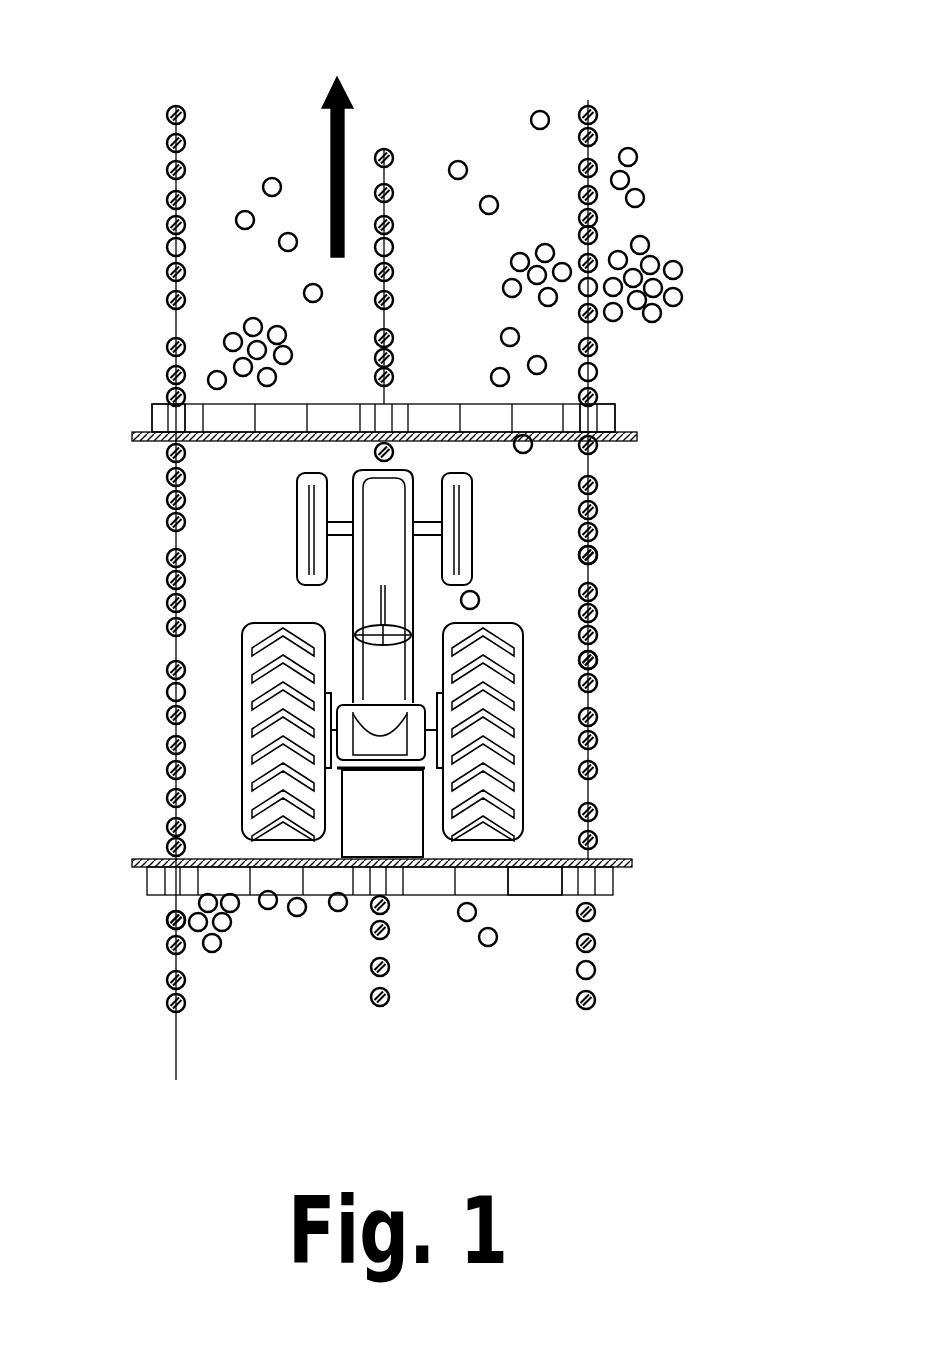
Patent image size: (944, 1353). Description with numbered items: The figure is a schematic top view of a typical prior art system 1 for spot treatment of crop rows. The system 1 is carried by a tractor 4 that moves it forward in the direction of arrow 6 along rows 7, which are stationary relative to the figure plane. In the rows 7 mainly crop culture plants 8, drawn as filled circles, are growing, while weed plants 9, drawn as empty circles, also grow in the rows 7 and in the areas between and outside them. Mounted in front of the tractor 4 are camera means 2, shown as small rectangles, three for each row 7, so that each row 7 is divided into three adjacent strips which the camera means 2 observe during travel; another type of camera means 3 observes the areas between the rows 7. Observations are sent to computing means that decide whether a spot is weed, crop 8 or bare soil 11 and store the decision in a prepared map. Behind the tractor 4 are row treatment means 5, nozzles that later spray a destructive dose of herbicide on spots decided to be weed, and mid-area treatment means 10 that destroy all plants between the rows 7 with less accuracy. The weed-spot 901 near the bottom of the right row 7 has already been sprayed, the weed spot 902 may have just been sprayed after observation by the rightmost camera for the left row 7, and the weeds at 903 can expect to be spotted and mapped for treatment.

The prior art system 1 is at (680, 628).
The camera means 2 is at (160, 415).
The camera means 3 is at (432, 412).
The tractor 4 is at (372, 578).
The row treatment means 5 is at (605, 882).
The arrow 6 is at (328, 160).
The rows 7 is at (178, 95).
The crop culture plants 8 is at (597, 662).
The weed plants 9 is at (166, 247).
The mid-area treatment means 10 is at (540, 885).
The bare soil 11 is at (592, 570).
The weed-spot 901 is at (597, 968).
The weed spot 902 is at (190, 935).
The weeds 903 is at (613, 320).